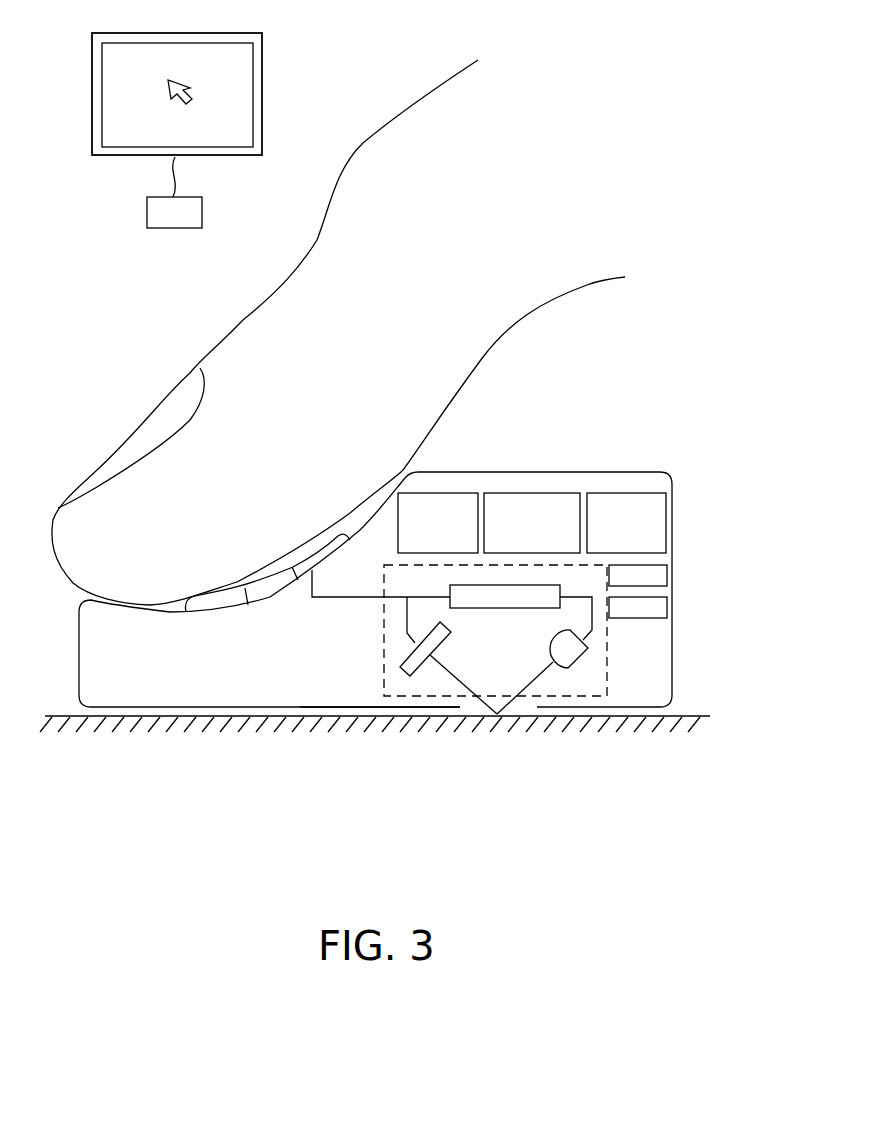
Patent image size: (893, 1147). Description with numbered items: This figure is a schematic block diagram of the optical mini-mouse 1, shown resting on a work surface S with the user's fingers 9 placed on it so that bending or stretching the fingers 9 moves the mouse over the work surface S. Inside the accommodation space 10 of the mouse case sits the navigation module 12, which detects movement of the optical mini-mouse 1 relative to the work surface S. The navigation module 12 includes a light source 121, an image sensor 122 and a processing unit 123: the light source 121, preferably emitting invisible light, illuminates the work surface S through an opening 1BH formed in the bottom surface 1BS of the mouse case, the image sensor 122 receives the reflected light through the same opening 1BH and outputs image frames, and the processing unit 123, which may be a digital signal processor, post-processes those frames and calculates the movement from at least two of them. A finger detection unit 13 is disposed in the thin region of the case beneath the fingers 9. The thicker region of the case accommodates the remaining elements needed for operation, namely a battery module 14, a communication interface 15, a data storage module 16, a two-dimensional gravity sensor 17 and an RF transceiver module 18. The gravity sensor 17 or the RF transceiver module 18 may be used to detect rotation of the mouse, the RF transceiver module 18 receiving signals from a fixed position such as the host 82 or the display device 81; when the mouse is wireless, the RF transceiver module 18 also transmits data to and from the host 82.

The optical mini-mouse 1 is at (150, 678).
The bottom surface 1BS is at (283, 707).
The opening 1BH is at (469, 707).
The work surface S is at (55, 716).
The fingers 9 is at (147, 443).
The accommodation space 10 is at (638, 657).
The navigation module 12 is at (607, 677).
The light source 121 is at (573, 657).
The image sensor 122 is at (415, 660).
The processing unit 123 is at (513, 627).
The finger detection unit 13 is at (233, 597).
The battery module 14 is at (459, 492).
The communication interface 15 is at (535, 492).
The data storage module 16 is at (630, 492).
The two-dimensional gravity sensor 17 is at (668, 573).
The RF transceiver module 18 is at (668, 605).
The display device 81 is at (263, 73).
The host 82 is at (145, 217).